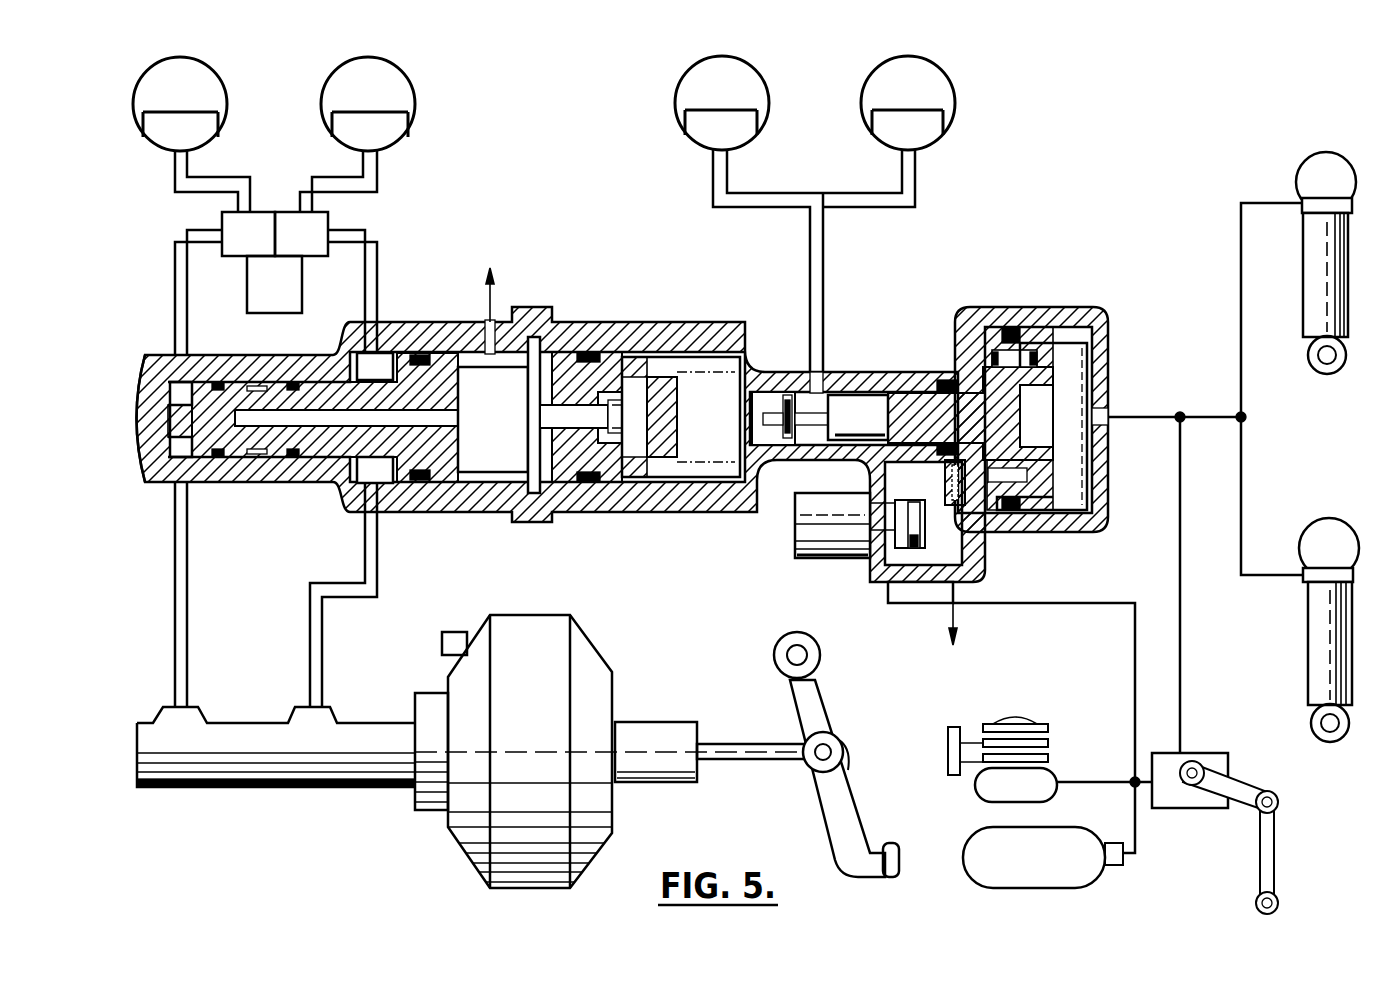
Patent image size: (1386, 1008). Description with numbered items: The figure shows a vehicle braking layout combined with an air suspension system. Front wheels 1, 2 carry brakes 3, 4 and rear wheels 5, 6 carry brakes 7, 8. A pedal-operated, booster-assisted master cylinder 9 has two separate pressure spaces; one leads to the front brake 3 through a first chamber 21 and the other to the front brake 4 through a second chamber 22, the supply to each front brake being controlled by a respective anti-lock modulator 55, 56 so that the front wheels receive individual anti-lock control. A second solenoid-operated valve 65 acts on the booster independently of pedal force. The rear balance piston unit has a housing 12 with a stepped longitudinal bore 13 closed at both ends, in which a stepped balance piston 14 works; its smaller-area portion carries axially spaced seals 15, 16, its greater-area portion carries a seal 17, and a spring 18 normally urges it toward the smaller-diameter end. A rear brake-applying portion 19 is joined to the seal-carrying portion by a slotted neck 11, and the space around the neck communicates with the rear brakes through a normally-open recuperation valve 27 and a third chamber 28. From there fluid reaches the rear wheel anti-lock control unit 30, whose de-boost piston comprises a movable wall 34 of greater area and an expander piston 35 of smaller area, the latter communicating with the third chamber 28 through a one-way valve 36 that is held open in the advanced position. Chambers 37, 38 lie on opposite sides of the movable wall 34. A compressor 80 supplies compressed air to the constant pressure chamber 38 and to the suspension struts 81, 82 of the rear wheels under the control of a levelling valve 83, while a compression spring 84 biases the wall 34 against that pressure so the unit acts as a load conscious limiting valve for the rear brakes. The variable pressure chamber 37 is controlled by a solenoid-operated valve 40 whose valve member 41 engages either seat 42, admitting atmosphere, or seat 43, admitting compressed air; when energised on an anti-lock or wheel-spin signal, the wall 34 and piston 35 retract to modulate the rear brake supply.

The front wheel 1 is at (163, 94).
The front wheel 2 is at (385, 94).
The front wheel brake 3 is at (172, 131).
The front wheel brake 4 is at (383, 132).
The rear wheel 5 is at (707, 86).
The rear wheel 6 is at (918, 90).
The rear wheel brake 7 is at (715, 128).
The rear wheel brake 8 is at (922, 132).
The master cylinder 9 is at (373, 788).
The slotted neck 11 is at (492, 448).
The housing 12 is at (606, 342).
The stepped longitudinal bore 13 is at (588, 352).
The stepped balance piston 14 is at (333, 400).
The seal 15 is at (220, 382).
The seal 16 is at (297, 382).
The seal 17 is at (402, 353).
The spring 18 is at (672, 470).
The rear brake-applying portion 19 is at (600, 482).
The first chamber 21 is at (148, 480).
The second chamber 22 is at (373, 472).
The recuperation valve 27 is at (630, 395).
The third chamber 28 is at (712, 395).
The anti-lock control unit 30 is at (1045, 318).
The movable wall 34 is at (1063, 357).
The expander piston 35 is at (860, 398).
The one-way valve 36 is at (790, 392).
The variable pressure chamber 37 is at (998, 355).
The constant pressure chamber 38 is at (1068, 378).
The solenoid-operated valve 40 is at (838, 545).
The valve member 41 is at (917, 540).
The seat 42 is at (917, 507).
The seat 43 is at (943, 535).
The anti-lock modulator 55 is at (255, 232).
The anti-lock modulator 56 is at (298, 232).
The second solenoid-operated valve 65 is at (458, 638).
The compressor 80 is at (1053, 772).
The suspension strut 81 is at (1320, 313).
The suspension strut 82 is at (1327, 660).
The levelling valve 83 is at (1215, 765).
The compression spring 84 is at (1006, 327).